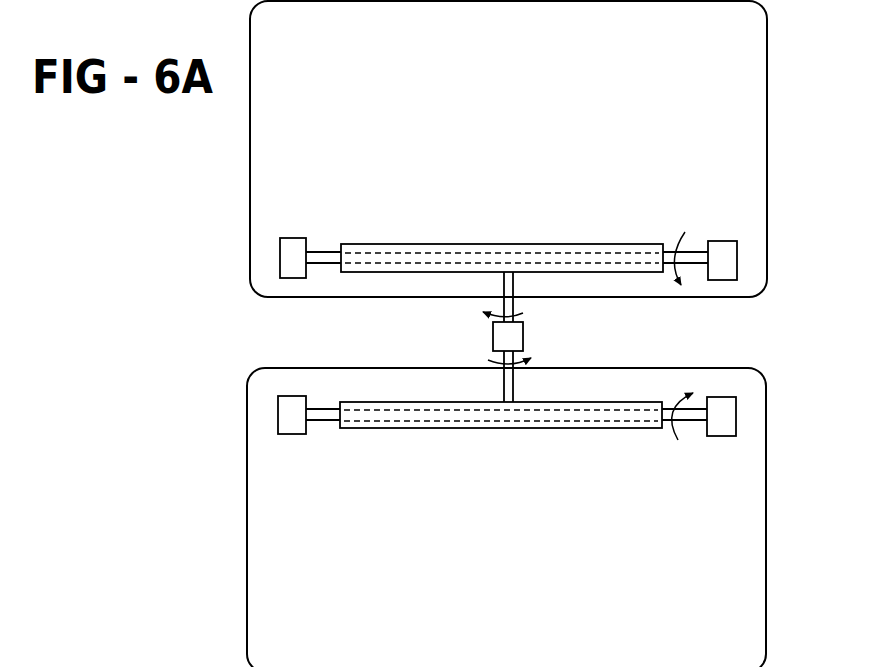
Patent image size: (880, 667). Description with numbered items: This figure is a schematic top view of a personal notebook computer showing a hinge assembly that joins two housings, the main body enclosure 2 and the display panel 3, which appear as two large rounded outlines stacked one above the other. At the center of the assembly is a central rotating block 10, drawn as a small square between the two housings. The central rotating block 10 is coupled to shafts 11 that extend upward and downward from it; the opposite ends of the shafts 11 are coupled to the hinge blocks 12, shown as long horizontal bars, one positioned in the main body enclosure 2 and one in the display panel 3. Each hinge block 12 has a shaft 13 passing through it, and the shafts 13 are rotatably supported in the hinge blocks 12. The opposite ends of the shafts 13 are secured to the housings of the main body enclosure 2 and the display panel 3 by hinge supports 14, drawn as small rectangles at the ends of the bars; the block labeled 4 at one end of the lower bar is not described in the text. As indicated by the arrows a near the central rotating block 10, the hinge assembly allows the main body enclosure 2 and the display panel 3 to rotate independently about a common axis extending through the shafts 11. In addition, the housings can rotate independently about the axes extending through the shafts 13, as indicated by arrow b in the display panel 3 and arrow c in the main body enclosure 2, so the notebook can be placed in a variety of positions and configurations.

The main body enclosure 2 is at (765, 570).
The display panel 3 is at (767, 195).
The drive/hinge block 4 is at (718, 437).
The central rotating block 10 is at (523, 337).
The shaft 11 is at (504, 287).
The hinge block 12 is at (551, 244).
The shaft 13 is at (322, 258).
The hinge support 14 is at (295, 243).
The arrows a is at (516, 317).
The arrow b is at (691, 263).
The arrow c is at (687, 422).